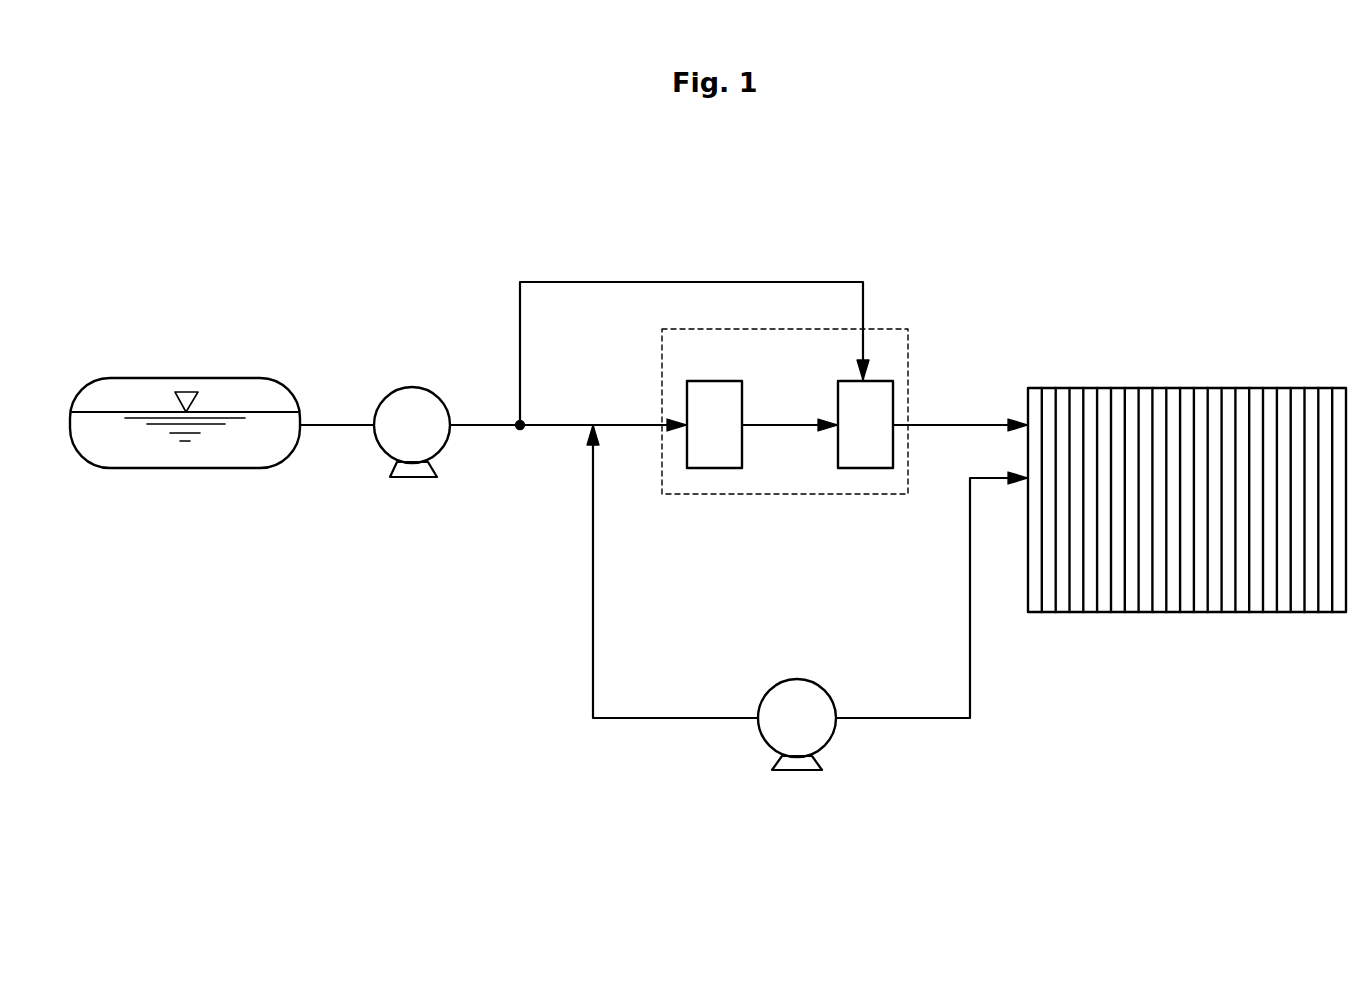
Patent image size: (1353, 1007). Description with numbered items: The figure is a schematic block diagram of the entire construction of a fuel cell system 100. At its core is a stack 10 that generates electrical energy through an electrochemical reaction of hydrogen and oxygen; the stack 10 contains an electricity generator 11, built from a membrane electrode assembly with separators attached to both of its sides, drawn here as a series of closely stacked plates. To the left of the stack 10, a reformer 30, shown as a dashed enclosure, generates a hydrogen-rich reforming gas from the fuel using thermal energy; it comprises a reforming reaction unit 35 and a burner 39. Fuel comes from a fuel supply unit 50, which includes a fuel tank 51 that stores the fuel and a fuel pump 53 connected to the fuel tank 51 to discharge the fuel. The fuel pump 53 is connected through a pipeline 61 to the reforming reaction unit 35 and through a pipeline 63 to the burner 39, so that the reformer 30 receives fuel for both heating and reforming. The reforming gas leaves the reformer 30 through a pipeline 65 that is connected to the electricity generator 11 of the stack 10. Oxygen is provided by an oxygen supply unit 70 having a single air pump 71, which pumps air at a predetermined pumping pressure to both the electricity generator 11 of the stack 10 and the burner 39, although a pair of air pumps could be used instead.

The fuel cell system 100 is at (748, 198).
The stack 10 is at (1285, 375).
The electricity generator 11 is at (1091, 613).
The reformer 30 is at (882, 328).
The reforming reaction unit 35 is at (872, 380).
The burner 39 is at (722, 380).
The fuel supply unit 50 is at (300, 528).
The fuel tank 51 is at (132, 468).
The fuel pump 53 is at (419, 388).
The pipeline 61 is at (778, 280).
The pipeline 63 is at (604, 424).
The pipeline 65 is at (946, 424).
The oxygen supply unit 70 is at (848, 748).
The air pump 71 is at (808, 679).